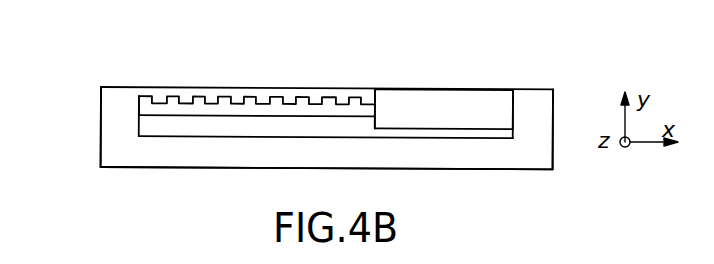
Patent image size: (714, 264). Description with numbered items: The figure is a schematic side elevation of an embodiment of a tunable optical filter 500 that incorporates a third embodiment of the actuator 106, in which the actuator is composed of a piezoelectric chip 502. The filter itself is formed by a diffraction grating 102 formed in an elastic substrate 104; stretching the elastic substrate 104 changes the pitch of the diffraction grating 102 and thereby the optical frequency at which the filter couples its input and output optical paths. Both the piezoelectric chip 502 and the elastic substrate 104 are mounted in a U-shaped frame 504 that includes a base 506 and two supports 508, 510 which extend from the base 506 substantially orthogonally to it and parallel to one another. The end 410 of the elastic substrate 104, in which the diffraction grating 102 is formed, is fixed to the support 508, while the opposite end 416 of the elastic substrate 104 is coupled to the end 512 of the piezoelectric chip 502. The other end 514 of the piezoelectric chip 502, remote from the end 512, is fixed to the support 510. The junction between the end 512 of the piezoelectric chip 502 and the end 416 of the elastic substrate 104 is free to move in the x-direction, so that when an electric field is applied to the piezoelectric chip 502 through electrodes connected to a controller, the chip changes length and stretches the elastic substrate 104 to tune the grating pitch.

The tunable optical filter 500 is at (558, 71).
The U-shaped frame 504 is at (99, 105).
The support 508 is at (112, 129).
The base 506 is at (157, 152).
The support 510 is at (538, 115).
The actuator 106 is at (328, 77).
The diffraction grating 102 is at (220, 97).
The elastic substrate 104 is at (273, 110).
The piezoelectric chip 502 is at (468, 120).
The end of the elastic substrate 410 is at (137, 102).
The end of the piezoelectric chip 512 is at (374, 89).
The end of the elastic substrate 416 is at (377, 105).
The end of the piezoelectric chip 514 is at (509, 106).